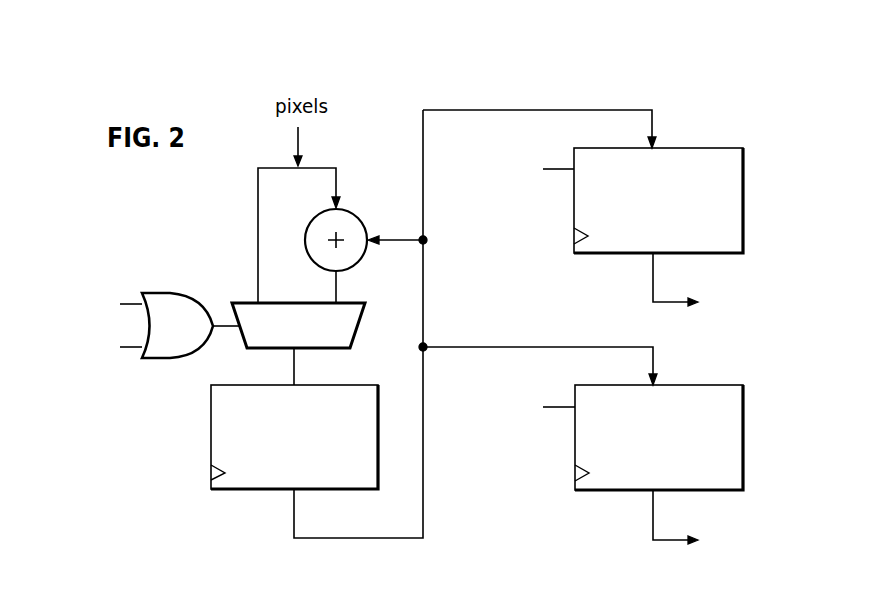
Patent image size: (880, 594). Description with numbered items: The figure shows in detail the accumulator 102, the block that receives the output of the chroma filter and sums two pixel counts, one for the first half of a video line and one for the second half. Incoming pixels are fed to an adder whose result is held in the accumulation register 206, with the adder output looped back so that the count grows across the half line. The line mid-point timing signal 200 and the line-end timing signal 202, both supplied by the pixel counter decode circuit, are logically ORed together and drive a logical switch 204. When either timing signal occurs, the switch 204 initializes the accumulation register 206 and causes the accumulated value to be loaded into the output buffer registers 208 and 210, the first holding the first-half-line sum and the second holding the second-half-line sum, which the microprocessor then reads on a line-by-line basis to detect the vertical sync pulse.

The accumulator 102 is at (681, 60).
The line mid-point timing signal 200 is at (72, 285).
The line-end timing signal 202 is at (77, 373).
The logical switch 204 is at (359, 322).
The accumulation register 206 is at (365, 421).
The output buffer register 208 is at (730, 183).
The output buffer register 210 is at (730, 420).